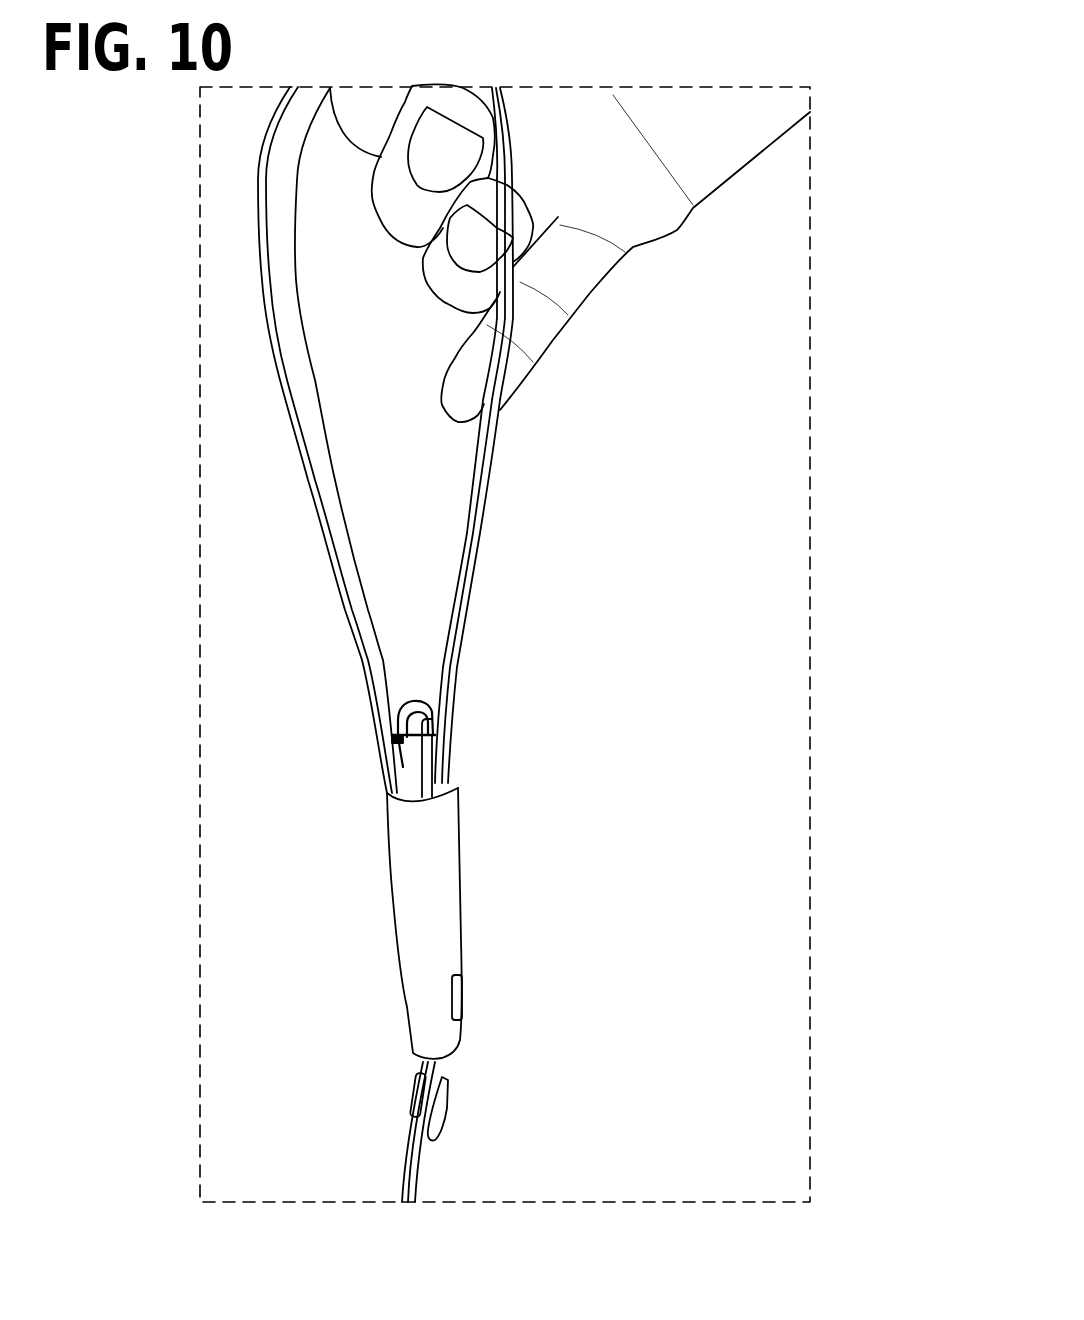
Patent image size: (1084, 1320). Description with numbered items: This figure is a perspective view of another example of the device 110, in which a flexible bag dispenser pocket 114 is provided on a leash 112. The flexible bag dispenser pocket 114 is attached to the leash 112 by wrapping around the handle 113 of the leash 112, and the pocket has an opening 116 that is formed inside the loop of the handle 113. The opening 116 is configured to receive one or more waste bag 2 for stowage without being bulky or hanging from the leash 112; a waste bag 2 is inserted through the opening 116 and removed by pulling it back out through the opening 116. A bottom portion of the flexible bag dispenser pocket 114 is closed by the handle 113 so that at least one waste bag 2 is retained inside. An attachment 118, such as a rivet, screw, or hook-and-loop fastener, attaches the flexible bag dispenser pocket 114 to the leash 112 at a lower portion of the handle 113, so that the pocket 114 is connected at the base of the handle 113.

The device 110 is at (793, 393).
The handle 113 is at (305, 468).
The opening 116 is at (423, 680).
The waste bag 2 is at (427, 738).
The flexible bag dispenser pocket 114 is at (387, 830).
The attachment 118 is at (462, 987).
The leash 112 is at (402, 1173).